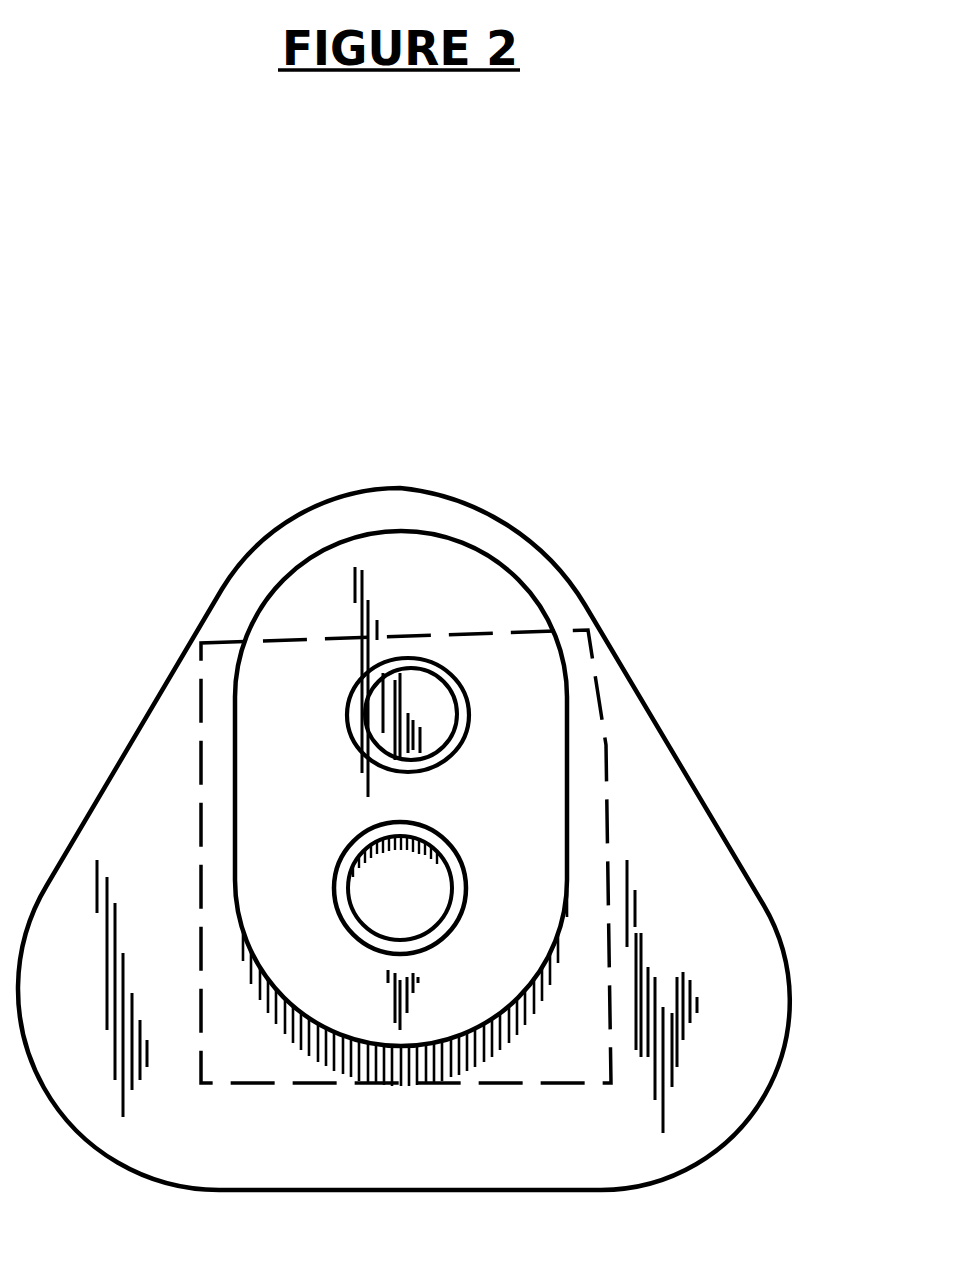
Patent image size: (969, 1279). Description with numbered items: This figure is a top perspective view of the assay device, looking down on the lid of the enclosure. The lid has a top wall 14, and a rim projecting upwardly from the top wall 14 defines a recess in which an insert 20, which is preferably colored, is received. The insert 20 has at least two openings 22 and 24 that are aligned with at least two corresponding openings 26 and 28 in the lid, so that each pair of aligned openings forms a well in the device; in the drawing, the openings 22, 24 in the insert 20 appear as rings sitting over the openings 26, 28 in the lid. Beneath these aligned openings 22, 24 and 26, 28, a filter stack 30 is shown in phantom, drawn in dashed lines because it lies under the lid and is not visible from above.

The top wall 14 is at (750, 1077).
The insert 20 is at (478, 603).
The opening 22 is at (423, 837).
The opening 24 is at (458, 692).
The opening 26 is at (385, 910).
The opening 28 is at (427, 733).
The filter stack 30 is at (628, 925).